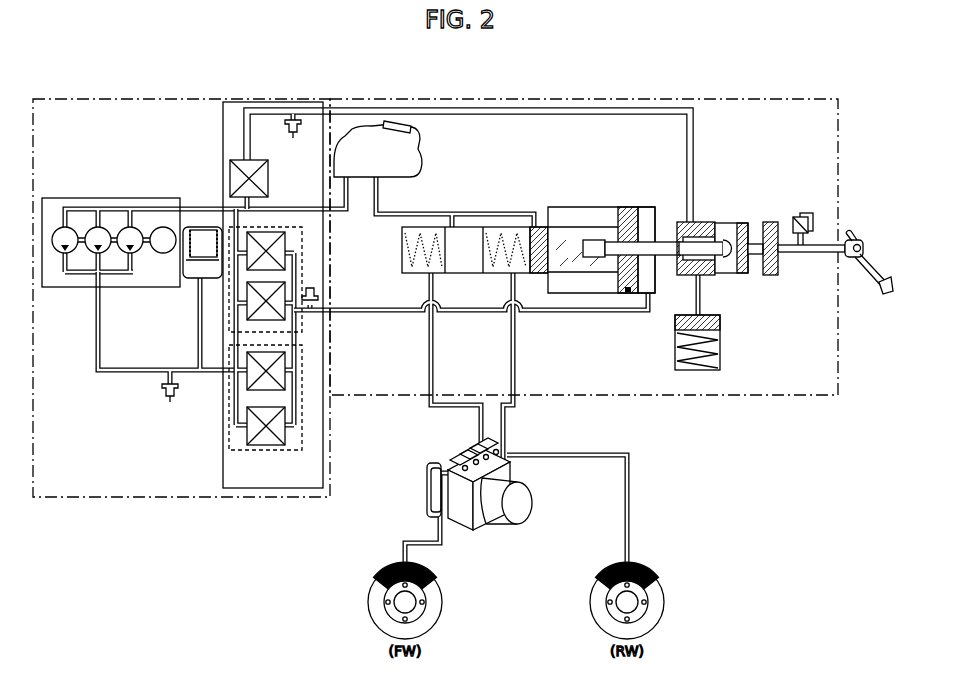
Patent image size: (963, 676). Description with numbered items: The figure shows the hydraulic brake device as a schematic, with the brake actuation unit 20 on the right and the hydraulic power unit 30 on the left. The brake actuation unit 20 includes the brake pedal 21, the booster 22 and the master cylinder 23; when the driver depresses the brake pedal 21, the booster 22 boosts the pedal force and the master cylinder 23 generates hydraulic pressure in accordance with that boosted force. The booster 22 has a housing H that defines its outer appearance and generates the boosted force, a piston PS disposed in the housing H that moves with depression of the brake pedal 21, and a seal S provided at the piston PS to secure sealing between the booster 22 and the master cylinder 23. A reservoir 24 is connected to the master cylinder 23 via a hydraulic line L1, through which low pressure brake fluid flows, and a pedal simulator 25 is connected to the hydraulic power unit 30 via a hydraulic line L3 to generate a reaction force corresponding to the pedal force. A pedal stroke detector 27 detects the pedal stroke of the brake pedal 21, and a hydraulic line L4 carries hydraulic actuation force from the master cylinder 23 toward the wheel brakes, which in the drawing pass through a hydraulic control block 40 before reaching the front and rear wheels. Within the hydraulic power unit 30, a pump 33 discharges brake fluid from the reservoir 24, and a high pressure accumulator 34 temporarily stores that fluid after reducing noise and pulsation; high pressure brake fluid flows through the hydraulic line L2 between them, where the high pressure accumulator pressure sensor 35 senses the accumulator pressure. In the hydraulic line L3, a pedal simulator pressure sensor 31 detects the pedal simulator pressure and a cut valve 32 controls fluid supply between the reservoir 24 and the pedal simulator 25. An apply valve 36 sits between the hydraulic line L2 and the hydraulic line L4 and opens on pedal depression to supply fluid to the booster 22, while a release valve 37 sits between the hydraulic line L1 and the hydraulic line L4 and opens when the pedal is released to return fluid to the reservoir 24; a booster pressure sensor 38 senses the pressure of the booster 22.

The brake actuation unit 20 is at (665, 99).
The brake pedal 21 is at (870, 267).
The booster 22 is at (645, 207).
The master cylinder 23 is at (475, 227).
The reservoir 24 is at (415, 147).
The pedal simulator 25 is at (720, 346).
The pedal stroke detector 27 is at (800, 215).
The hydraulic power unit 30 is at (155, 99).
The pedal simulator pressure sensor 31 is at (293, 138).
The cut valve 32 is at (268, 180).
The pump 33 is at (98, 198).
The high pressure accumulator 34 is at (190, 284).
The high pressure accumulator pressure sensor 35 is at (170, 402).
The apply valve 36 is at (302, 421).
The release valve 37 is at (302, 257).
The booster pressure sensor 38 is at (318, 291).
The hydraulic control unit 40 is at (497, 526).
The hydraulic line L1 is at (205, 206).
The hydraulic line L2 is at (125, 371).
The hydraulic line L3 is at (530, 99).
The hydraulic line L4 is at (436, 342).
The housing H is at (562, 207).
The piston PS is at (618, 277).
The seal S is at (628, 291).